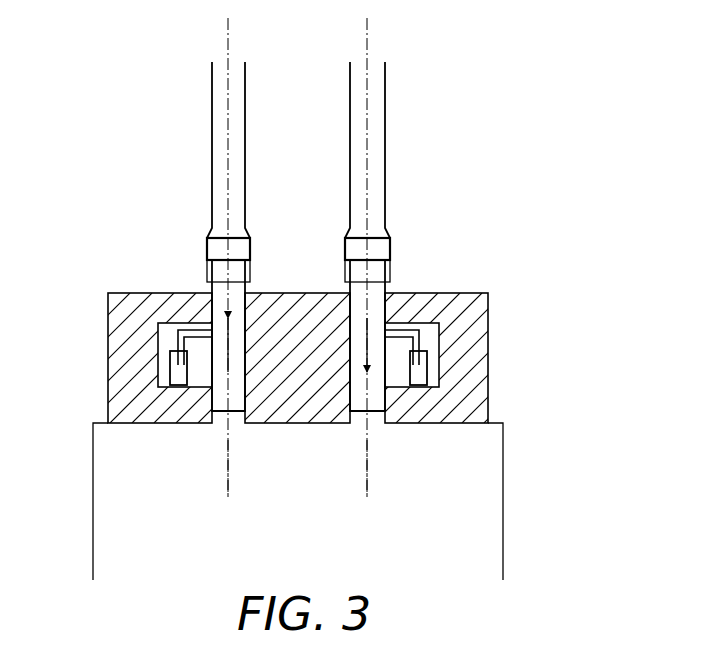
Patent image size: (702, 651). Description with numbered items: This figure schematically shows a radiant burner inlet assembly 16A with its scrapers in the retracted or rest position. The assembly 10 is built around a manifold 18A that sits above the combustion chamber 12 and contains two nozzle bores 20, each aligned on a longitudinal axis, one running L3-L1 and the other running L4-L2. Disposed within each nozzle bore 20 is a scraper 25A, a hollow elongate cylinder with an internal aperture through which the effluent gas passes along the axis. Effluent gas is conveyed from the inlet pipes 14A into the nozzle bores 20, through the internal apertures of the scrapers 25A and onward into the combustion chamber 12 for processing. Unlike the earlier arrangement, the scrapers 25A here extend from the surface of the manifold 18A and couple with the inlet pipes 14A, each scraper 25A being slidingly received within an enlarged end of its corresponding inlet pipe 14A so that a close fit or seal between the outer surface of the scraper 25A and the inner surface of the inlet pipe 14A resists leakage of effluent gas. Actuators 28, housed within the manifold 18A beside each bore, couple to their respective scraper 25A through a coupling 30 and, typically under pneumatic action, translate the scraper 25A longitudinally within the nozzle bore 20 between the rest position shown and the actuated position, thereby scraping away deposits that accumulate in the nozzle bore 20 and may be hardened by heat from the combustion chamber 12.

The apparatus 10 is at (511, 440).
The combustion chamber 12 is at (311, 558).
The inlet pipe 14A is at (212, 92).
The radiant burner inlet assembly 16A is at (101, 220).
The manifold 18A is at (478, 302).
The nozzle bore 20 is at (233, 414).
The scraper 25A is at (345, 285).
The actuator 28 is at (170, 372).
The coupling 30 is at (183, 330).
The longitudinal axis L1 is at (228, 488).
The longitudinal axis L2 is at (367, 488).
The longitudinal axis L3 is at (228, 26).
The longitudinal axis L4 is at (367, 26).